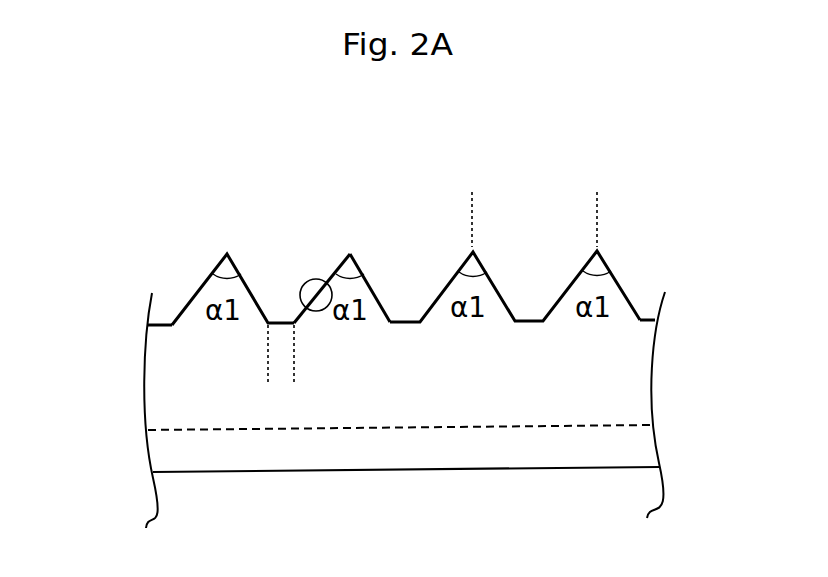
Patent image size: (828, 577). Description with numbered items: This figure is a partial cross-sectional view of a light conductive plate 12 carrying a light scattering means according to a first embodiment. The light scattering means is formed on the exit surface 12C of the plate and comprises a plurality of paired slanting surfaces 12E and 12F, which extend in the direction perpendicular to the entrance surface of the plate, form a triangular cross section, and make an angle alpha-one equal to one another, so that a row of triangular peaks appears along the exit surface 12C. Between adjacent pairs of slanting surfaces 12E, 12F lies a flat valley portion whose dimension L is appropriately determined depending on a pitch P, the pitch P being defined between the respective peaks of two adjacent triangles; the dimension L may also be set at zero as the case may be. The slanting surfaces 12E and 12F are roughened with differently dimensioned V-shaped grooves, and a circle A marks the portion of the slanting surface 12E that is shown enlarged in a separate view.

The light conductive plate 12 is at (145, 460).
The exit surface 12C is at (243, 238).
The slanting surface 12E is at (323, 277).
The slanting surface 12F is at (358, 267).
The circle A is at (305, 282).
The pitch P is at (640, 218).
The dimension of flat valley portion L is at (340, 361).